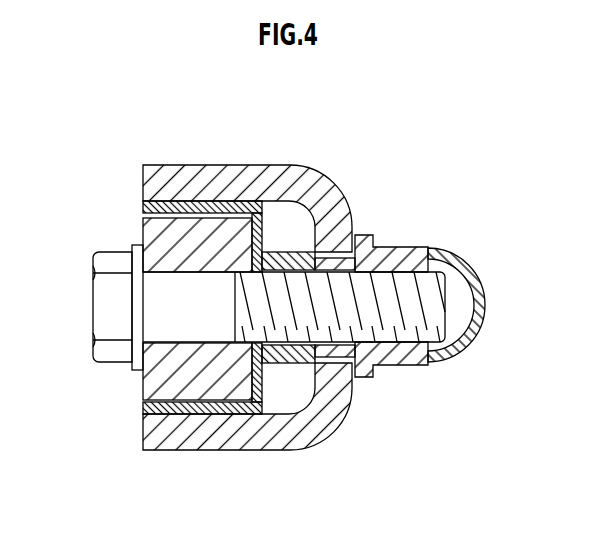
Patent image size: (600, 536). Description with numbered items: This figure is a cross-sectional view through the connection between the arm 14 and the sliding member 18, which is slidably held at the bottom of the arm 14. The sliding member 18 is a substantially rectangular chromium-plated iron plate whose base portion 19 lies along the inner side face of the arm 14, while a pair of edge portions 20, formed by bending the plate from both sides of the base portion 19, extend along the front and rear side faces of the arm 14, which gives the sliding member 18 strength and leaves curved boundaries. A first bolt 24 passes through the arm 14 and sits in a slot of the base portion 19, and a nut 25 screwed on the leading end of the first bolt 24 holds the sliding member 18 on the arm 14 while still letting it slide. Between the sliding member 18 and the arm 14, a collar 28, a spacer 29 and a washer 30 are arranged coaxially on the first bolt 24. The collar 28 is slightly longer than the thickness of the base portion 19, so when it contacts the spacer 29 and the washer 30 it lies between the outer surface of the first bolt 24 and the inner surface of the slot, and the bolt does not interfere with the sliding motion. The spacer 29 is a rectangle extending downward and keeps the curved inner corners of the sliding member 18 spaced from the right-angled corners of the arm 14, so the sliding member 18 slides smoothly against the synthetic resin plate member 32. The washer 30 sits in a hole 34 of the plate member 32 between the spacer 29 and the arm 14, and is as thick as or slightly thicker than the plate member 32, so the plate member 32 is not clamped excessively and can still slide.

The arm 14 is at (152, 232).
The sliding member 18 is at (322, 441).
The base portion 19 is at (359, 216).
The edge portions 20 is at (215, 156).
The first bolt 24 is at (92, 312).
The nut 25 is at (405, 246).
The collar 28 is at (349, 384).
The spacer 29 is at (346, 407).
The washer 30 is at (251, 403).
The plate member 32 is at (160, 451).
The hole 34 is at (264, 386).